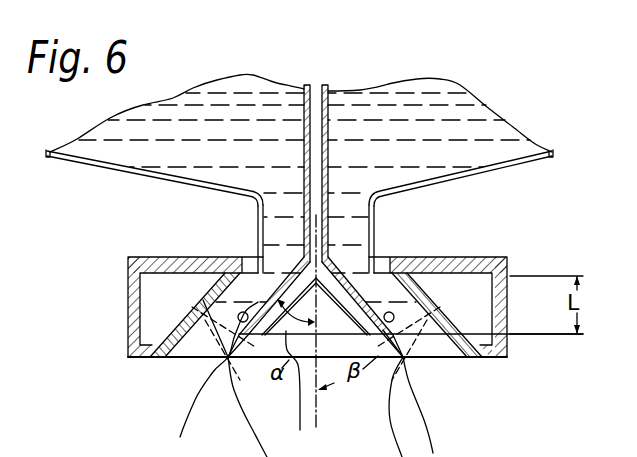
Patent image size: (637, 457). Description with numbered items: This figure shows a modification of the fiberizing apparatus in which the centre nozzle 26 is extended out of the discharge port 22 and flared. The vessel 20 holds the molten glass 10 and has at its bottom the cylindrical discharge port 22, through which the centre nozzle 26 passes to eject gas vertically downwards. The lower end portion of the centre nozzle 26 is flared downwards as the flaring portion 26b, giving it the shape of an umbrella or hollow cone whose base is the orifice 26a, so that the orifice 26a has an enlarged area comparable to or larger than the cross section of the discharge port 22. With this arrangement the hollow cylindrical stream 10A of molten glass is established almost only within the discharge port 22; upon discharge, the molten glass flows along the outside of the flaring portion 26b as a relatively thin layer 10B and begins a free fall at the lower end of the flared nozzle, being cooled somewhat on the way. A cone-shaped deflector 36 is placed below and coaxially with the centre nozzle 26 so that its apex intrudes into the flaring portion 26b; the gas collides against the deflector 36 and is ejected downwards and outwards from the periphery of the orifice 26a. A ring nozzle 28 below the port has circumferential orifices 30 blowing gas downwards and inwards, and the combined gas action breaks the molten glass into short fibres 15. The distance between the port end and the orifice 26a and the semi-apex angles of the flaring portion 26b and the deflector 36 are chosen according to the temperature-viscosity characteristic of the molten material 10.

The molten glass 10 is at (463, 112).
The hollow cylindrical stream 10A is at (350, 208).
The thin layer 10B is at (213, 360).
The fibres 15 is at (422, 421).
The vessel 20 is at (153, 178).
The discharge port 22 is at (375, 240).
The centre nozzle 26 is at (329, 201).
The orifice 26a is at (408, 340).
The flaring portion 26b is at (283, 281).
The ring nozzle 28 is at (128, 304).
The orifices 30 is at (197, 305).
The deflector 36 is at (302, 394).